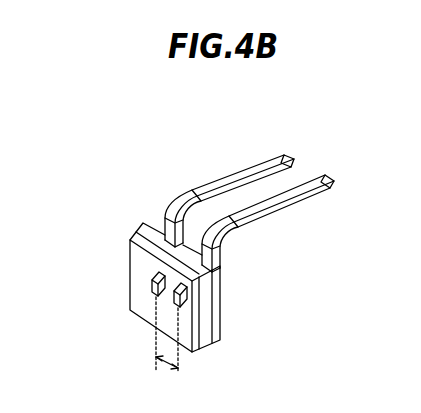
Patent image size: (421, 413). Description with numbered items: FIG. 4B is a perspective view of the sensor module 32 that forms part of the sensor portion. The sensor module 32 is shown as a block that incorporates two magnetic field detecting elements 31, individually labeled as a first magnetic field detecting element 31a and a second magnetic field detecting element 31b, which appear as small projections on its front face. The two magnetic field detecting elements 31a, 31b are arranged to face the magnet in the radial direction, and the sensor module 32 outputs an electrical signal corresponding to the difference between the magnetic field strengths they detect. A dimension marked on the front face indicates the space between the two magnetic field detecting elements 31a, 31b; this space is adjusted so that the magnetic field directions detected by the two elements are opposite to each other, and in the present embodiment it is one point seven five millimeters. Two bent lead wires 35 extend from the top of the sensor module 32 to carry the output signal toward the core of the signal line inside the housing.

The magnetic field detecting elements 31 is at (176, 287).
The magnetic field detecting element 31a is at (150, 292).
The magnetic field detecting element 31b is at (189, 296).
The sensor module 32 is at (137, 298).
The lead wires 35 is at (265, 205).